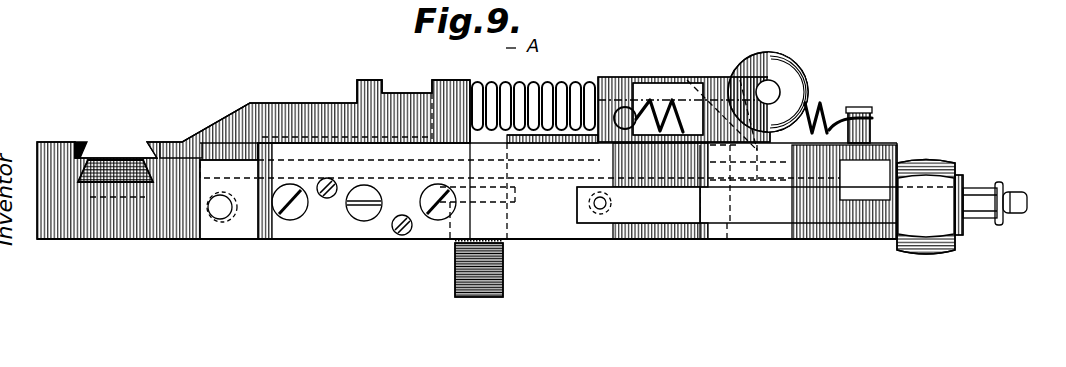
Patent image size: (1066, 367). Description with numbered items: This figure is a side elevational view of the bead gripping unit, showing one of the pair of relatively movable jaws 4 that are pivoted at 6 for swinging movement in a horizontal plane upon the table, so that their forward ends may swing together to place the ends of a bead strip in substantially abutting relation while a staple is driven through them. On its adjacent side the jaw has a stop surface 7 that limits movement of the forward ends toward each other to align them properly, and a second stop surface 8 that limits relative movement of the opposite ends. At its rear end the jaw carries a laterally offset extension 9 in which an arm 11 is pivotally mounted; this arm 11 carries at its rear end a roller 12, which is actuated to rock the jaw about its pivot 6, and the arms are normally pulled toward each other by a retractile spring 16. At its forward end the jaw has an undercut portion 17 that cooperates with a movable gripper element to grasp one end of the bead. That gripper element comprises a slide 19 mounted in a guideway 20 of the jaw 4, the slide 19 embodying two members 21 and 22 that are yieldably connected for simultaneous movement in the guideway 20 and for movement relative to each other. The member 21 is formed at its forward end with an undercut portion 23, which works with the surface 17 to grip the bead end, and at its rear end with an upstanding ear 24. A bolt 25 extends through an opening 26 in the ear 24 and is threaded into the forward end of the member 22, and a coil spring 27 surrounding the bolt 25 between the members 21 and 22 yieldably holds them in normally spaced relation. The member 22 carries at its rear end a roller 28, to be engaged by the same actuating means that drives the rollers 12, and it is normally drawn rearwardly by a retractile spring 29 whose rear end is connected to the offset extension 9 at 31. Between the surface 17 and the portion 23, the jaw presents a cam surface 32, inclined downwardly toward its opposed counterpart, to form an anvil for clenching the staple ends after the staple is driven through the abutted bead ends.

The jaw 4 is at (427, 240).
The pivot 6 is at (505, 272).
The stop surface 7 is at (373, 228).
The second stop surface 8 is at (575, 240).
The laterally offset extension 9 is at (775, 170).
The arm 11 is at (737, 205).
The roller 12 is at (926, 160).
The retractile spring 16 is at (1006, 188).
The undercut portion 17 is at (77, 142).
The slide 19 is at (314, 103).
The guideway 20 is at (247, 182).
The member 21 is at (259, 108).
The member 22 is at (630, 78).
The undercut portion 23 is at (160, 142).
The upstanding ear 24 is at (467, 80).
The bolt 25 is at (367, 80).
The opening 26 is at (432, 82).
The coil spring 27 is at (560, 84).
The roller 28 is at (768, 52).
The retractile spring 29 is at (684, 105).
The connection point 31 is at (858, 107).
The cam surface 32 is at (113, 164).